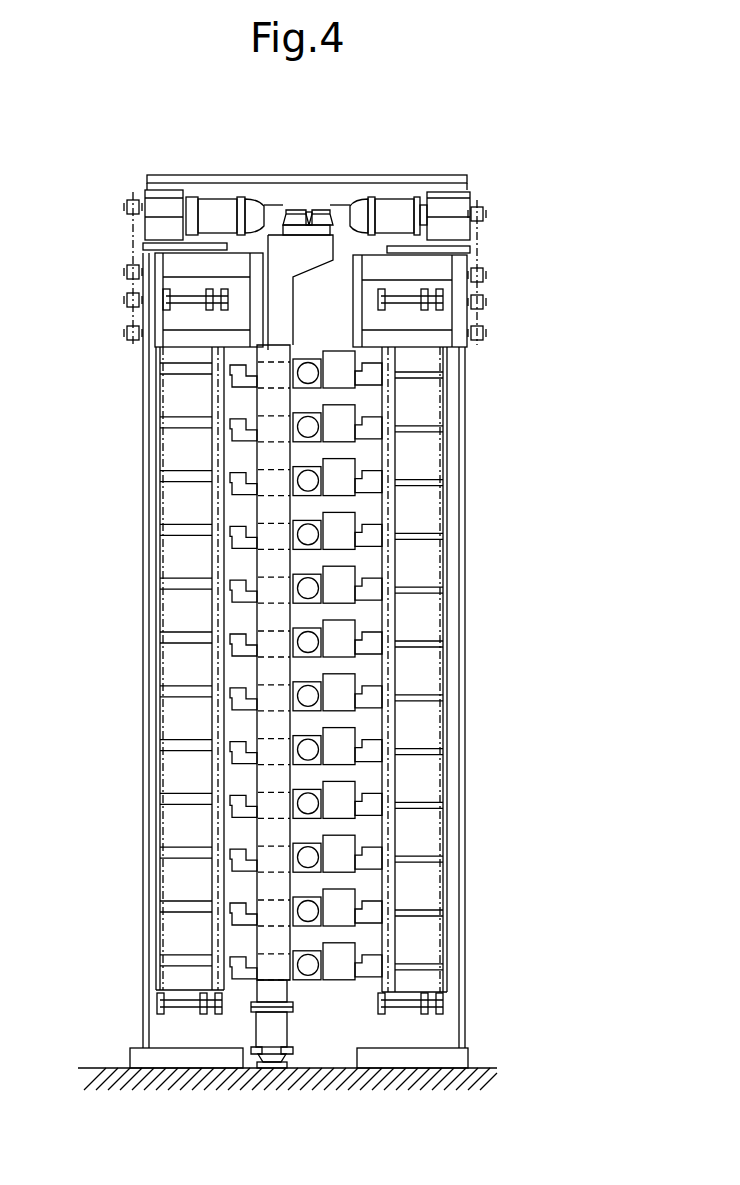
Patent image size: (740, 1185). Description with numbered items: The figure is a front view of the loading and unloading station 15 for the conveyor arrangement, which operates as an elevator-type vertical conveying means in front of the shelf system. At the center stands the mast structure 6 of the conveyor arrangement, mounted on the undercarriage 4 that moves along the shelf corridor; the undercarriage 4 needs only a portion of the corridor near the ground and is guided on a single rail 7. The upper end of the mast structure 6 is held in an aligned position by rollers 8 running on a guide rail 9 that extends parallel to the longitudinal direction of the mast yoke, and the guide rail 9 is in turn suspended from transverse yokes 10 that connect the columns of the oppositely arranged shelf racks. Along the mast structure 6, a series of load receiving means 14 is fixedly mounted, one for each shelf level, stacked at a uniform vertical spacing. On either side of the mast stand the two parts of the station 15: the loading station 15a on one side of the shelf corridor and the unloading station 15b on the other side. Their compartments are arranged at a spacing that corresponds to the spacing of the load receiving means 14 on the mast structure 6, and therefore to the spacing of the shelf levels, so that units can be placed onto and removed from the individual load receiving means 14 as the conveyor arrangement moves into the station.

The undercarriage 4 is at (279, 1025).
The mast structure 6 is at (283, 315).
The rail 7 is at (272, 1055).
The rollers 8 is at (285, 211).
The guide rail 9 is at (306, 214).
The transverse yokes 10 is at (212, 188).
The load receiving means 14 is at (240, 443).
The loading and unloading station 15 is at (381, 166).
The loading station 15a is at (141, 690).
The unloading station 15b is at (465, 547).